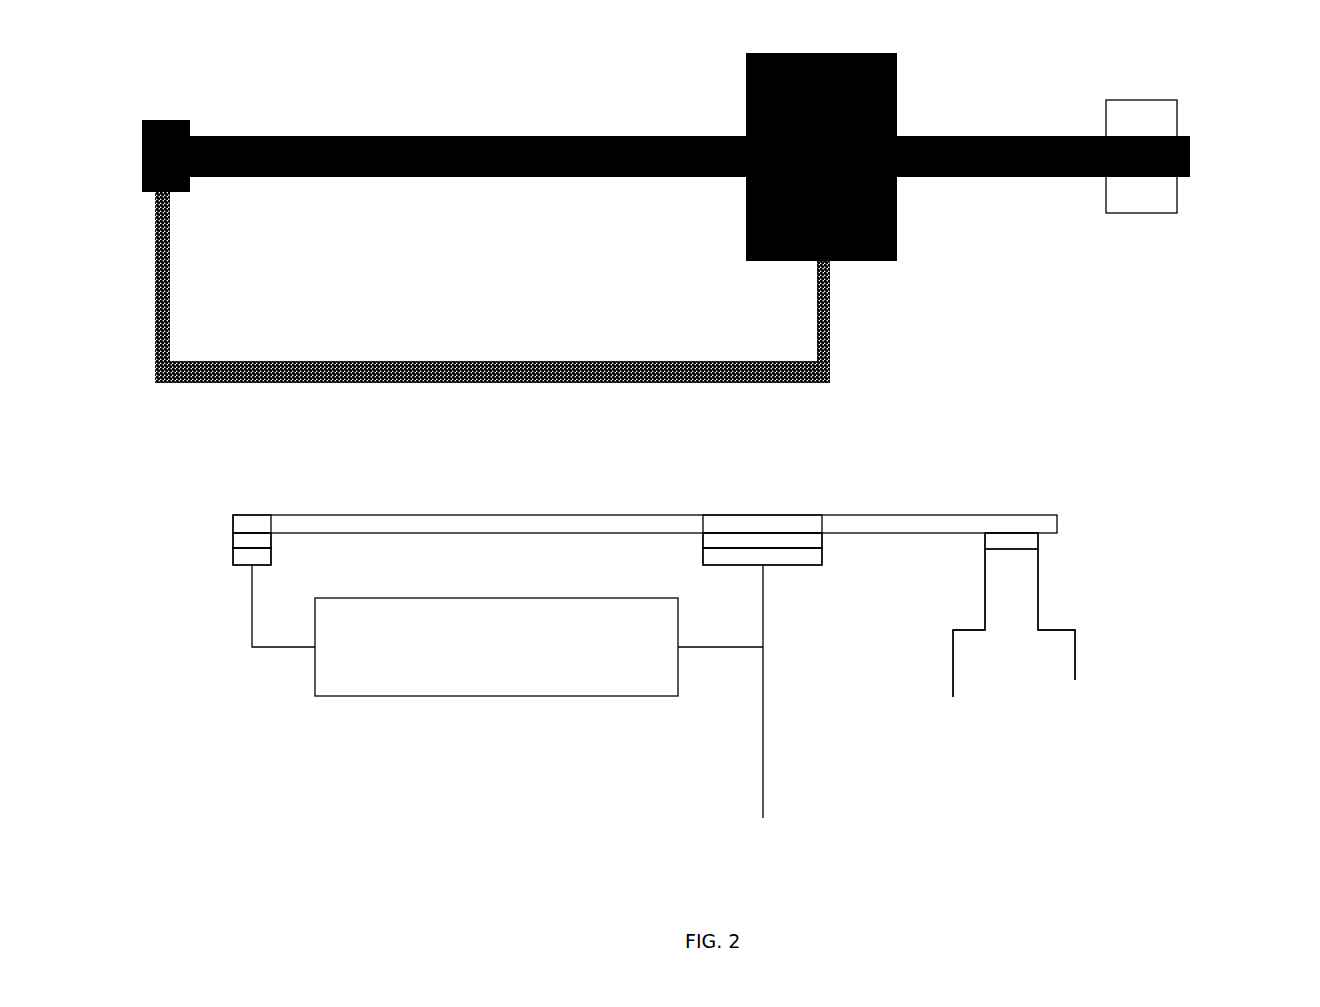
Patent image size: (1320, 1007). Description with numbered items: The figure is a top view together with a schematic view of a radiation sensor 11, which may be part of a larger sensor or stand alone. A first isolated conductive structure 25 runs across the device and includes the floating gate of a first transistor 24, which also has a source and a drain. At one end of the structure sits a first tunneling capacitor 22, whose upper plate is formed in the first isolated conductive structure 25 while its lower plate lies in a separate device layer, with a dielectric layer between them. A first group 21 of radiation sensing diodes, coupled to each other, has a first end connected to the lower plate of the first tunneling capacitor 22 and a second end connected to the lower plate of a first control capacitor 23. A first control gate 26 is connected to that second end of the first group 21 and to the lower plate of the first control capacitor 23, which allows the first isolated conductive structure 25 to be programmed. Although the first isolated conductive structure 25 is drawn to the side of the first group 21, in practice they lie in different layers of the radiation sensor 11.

The radiation sensor 11 is at (666, 867).
The first group of radiation sensing diodes 21 is at (473, 361).
The first tunneling capacitor 22 is at (214, 538).
The first control capacitor 23 is at (783, 588).
The first transistor 24 is at (968, 560).
The first isolated conductive structure 25 is at (442, 133).
The first control gate 26 is at (732, 700).